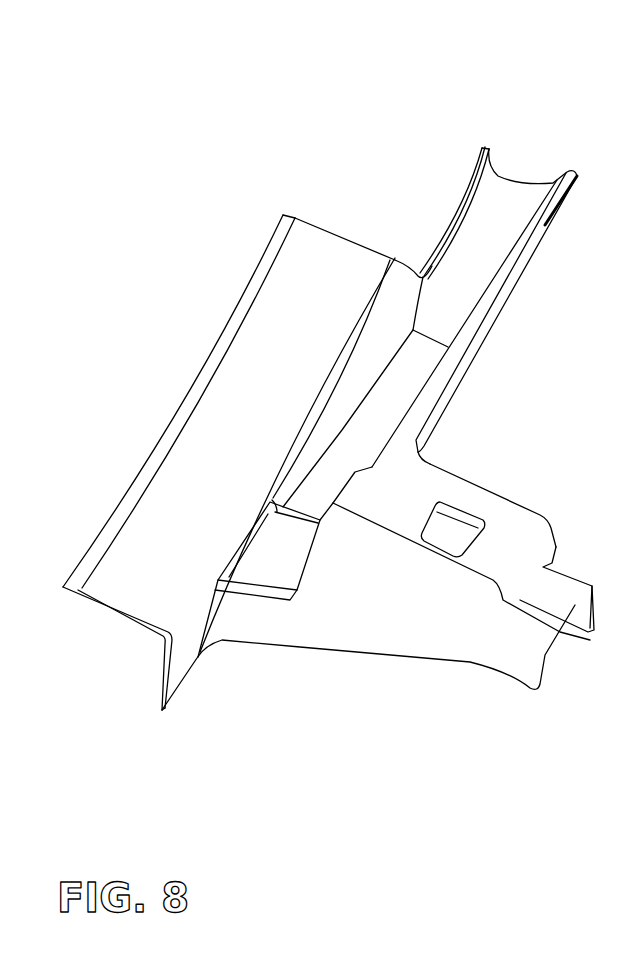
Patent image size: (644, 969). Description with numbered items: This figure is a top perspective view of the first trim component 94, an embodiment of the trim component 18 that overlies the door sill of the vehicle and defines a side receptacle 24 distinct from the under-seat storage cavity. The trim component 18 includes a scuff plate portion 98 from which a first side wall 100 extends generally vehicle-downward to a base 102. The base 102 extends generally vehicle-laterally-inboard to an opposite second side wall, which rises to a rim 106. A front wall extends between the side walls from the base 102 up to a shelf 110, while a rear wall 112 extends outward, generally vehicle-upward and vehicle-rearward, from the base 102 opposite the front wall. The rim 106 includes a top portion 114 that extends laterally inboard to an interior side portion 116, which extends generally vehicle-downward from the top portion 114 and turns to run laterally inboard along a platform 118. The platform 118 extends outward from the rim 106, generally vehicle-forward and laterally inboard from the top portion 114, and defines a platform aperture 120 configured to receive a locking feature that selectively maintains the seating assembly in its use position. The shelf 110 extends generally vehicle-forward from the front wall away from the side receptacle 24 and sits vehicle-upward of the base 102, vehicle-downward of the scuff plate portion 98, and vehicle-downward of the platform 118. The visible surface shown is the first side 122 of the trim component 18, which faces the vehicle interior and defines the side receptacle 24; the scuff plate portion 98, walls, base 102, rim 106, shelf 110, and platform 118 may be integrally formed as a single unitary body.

The trim component 18 is at (347, 118).
The first trim component 94 is at (395, 120).
The side receptacle 24 is at (391, 401).
The scuff plate portion 98 is at (232, 485).
The first side wall 100 is at (398, 298).
The base 102 is at (369, 457).
The rim 106 is at (508, 284).
The shelf 110 is at (284, 570).
The rear wall 112 is at (506, 235).
The top portion 114 is at (462, 365).
The interior side portion 116 is at (455, 473).
The platform 118 is at (408, 515).
The platform aperture 120 is at (447, 527).
The first side 122 is at (140, 558).